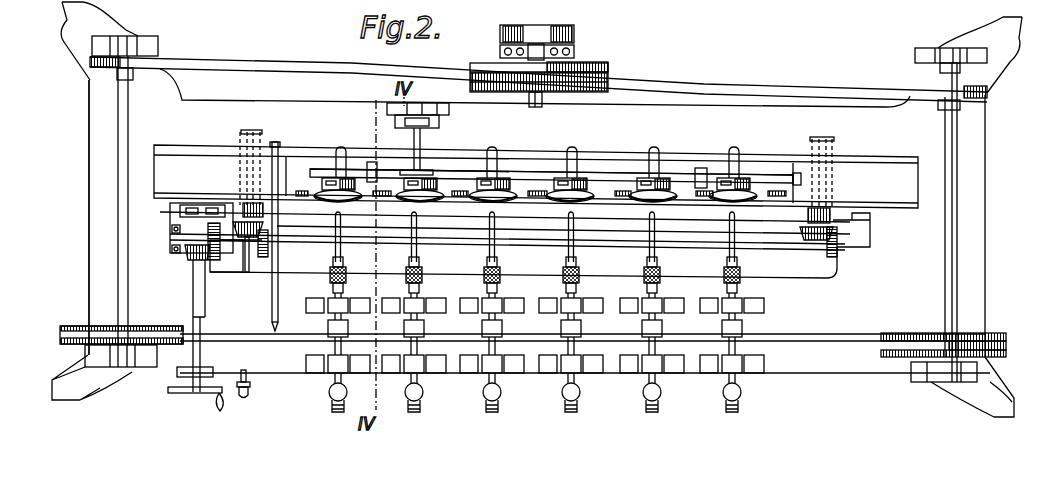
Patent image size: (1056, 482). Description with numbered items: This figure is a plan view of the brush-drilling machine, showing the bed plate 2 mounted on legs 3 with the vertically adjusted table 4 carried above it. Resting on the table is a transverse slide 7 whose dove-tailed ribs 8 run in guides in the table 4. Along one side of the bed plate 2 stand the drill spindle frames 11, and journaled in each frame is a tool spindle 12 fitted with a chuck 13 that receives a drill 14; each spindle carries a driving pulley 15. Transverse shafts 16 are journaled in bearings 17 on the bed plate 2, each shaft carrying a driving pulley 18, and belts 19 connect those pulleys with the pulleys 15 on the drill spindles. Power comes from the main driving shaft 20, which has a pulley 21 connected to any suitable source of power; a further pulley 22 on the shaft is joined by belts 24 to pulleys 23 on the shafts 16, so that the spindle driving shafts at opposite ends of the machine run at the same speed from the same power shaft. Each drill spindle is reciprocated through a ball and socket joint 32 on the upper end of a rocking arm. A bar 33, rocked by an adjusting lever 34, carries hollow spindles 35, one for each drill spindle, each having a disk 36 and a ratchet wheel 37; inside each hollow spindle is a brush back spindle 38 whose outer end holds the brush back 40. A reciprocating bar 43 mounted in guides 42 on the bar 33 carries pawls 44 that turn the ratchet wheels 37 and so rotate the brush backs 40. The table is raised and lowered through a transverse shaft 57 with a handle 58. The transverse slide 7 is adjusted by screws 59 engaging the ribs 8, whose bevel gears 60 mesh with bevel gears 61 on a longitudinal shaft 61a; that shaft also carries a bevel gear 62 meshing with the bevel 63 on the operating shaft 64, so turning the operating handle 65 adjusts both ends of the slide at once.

The bed plate 2 is at (97, 284).
The legs 3 is at (80, 45).
The vertically adjusted table 4 is at (885, 152).
The transverse slide 7 is at (764, 166).
The dove-tailed ribs 8 is at (262, 148).
The drill spindle frames 11 is at (326, 308).
The tool spindle 12 is at (486, 380).
The chuck 13 is at (330, 278).
The drill 14 is at (562, 237).
The driving pulley 15 is at (482, 326).
The transverse shafts 16 is at (120, 237).
The bearings 17 is at (150, 38).
The driving pulley 18 is at (62, 342).
The belts 19 is at (258, 344).
The main driving shaft 20 is at (539, 104).
The pulley 21 is at (576, 34).
The pulley 22 is at (600, 70).
The pulleys 23 is at (158, 58).
The belts 24 is at (298, 66).
The ball and socket joint 32 is at (486, 392).
The bar 33 is at (690, 172).
The adjusting lever 34 is at (272, 300).
The hollow spindles 35 is at (566, 164).
The disk 36 is at (552, 200).
The ratchet wheel 37 is at (640, 202).
The brush back spindle 38 is at (572, 150).
The brush back 40 is at (462, 210).
The guides 42 is at (402, 150).
The reciprocating bar 43 is at (660, 182).
The pawls 44 is at (602, 192).
The transverse shaft 57 is at (236, 269).
The handle 58 is at (250, 392).
The screws 59 is at (257, 134).
The bevel gears 60 is at (265, 227).
The bevel gears 61 is at (270, 246).
The longitudinal shaft 61a is at (505, 240).
The bevel gear 62 is at (212, 245).
The bevel 63 is at (183, 250).
The operating shaft 64 is at (195, 296).
The operating handle 65 is at (194, 394).